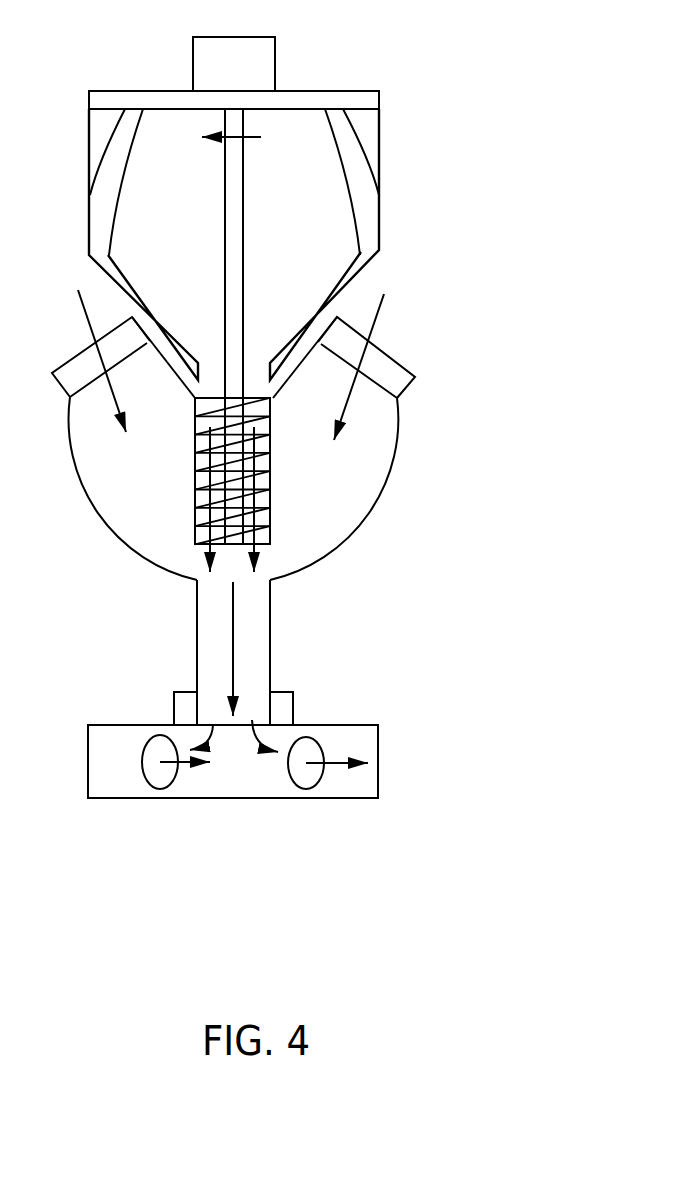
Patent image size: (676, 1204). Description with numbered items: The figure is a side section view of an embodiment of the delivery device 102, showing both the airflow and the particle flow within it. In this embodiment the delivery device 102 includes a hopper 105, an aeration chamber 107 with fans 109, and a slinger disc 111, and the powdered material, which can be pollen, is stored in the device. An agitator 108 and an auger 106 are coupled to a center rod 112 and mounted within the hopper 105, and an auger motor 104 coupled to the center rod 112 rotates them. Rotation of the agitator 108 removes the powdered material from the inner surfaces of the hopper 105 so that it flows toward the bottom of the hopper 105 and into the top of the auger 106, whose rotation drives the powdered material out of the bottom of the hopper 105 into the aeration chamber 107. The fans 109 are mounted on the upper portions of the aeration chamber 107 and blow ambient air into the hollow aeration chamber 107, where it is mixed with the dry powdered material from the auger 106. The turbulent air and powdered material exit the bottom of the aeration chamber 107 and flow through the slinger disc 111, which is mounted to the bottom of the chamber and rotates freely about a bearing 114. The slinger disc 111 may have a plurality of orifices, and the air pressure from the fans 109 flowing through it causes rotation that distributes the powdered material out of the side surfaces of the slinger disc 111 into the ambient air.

The delivery device 102 is at (455, 102).
The auger motor 104 is at (267, 58).
The hopper 105 is at (372, 157).
The auger 106 is at (260, 448).
The aeration chamber 107 is at (332, 497).
The agitator 108 is at (105, 200).
The fans 109 is at (400, 380).
The slinger disc 111 is at (350, 733).
The center rod 112 is at (237, 240).
The bearing 114 is at (285, 703).